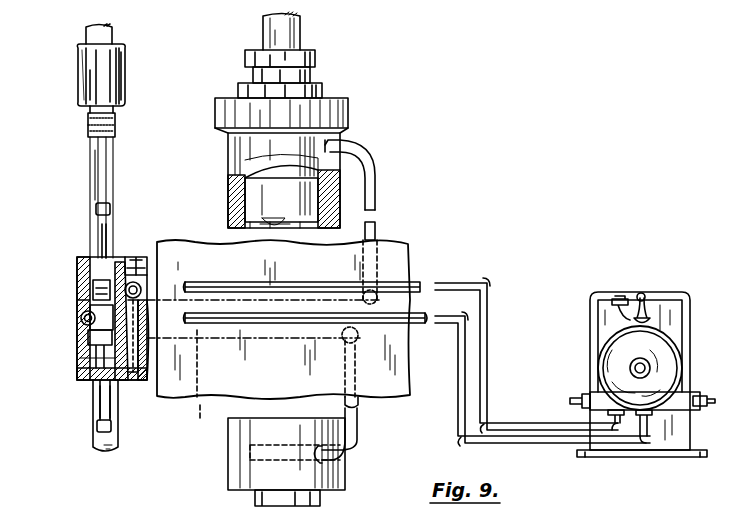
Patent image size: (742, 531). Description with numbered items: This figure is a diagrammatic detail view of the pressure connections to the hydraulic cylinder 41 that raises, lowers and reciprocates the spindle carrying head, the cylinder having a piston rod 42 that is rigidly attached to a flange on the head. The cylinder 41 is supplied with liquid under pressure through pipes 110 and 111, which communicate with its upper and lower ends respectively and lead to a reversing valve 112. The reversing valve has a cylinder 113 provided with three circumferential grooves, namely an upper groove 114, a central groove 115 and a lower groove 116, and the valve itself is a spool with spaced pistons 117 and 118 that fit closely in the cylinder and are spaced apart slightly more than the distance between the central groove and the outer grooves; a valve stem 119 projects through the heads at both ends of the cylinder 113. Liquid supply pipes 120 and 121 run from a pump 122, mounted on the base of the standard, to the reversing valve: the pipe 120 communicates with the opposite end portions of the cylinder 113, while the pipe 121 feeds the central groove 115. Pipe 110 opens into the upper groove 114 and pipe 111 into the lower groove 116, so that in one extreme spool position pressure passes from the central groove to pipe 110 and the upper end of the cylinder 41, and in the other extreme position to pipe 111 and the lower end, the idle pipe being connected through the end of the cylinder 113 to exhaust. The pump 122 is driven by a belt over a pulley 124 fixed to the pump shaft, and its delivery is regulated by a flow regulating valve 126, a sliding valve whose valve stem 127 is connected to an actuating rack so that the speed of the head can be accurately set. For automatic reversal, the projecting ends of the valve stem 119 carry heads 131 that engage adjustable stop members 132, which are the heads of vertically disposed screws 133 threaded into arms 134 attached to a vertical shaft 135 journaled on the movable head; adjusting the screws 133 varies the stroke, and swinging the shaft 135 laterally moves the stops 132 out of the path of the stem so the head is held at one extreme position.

The hydraulic cylinder 41 is at (233, 218).
The piston rod 42 is at (295, 38).
The pipe 110 is at (376, 196).
The pipe 111 is at (373, 425).
The reversing valve 112 is at (136, 260).
The cylinder 113 is at (90, 290).
The upper groove 114 is at (82, 316).
The central groove 115 is at (80, 338).
The lower groove 116 is at (80, 356).
The piston 117 is at (78, 272).
The piston 118 is at (80, 382).
The valve stem 119 is at (105, 232).
The liquid supply pipe 120 is at (285, 283).
The liquid supply pipe 121 is at (275, 325).
The pump 122 is at (668, 298).
The pulley 124 is at (668, 362).
The flow regulating valve 126 is at (684, 393).
The valve stem 127 is at (572, 398).
The head 131 is at (95, 209).
The adjustable stop member 132 is at (115, 130).
The screw 133 is at (90, 124).
The arm 134 is at (112, 85).
The vertical shaft 135 is at (108, 176).